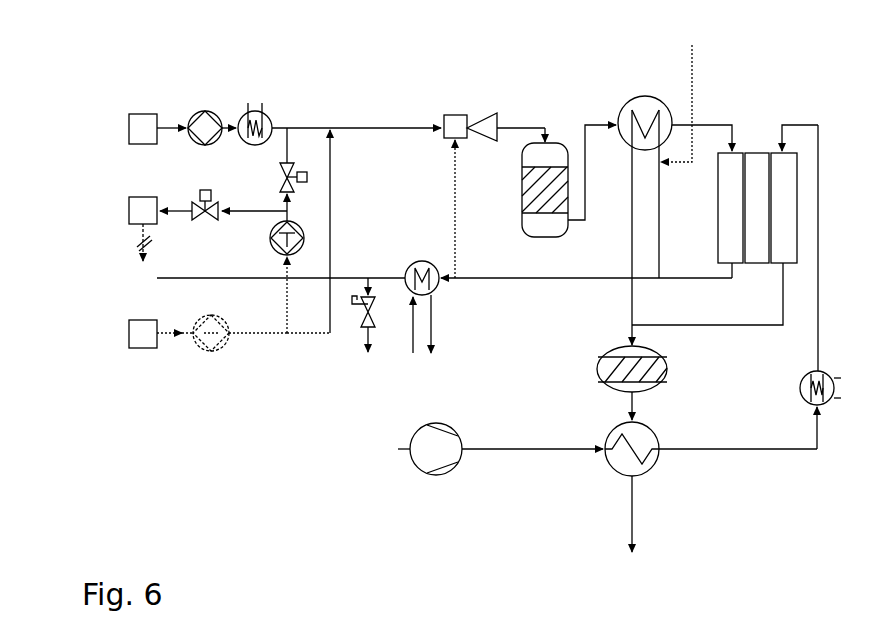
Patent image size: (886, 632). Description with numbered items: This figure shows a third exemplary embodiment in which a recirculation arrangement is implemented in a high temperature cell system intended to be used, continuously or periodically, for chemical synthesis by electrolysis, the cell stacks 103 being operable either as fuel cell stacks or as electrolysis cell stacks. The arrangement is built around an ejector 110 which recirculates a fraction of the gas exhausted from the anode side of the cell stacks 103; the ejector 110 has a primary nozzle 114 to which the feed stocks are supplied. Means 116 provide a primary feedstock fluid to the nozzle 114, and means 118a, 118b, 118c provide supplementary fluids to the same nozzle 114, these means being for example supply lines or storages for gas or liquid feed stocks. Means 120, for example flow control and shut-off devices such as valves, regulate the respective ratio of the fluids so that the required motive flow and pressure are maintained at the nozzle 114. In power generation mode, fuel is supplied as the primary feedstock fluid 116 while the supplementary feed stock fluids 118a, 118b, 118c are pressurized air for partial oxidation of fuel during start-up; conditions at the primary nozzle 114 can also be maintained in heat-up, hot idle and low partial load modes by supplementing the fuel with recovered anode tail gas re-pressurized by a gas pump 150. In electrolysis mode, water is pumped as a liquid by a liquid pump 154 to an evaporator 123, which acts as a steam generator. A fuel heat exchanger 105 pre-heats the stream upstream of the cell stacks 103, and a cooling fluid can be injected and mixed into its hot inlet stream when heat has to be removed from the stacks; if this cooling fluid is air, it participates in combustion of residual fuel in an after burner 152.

The cell stacks 103 is at (768, 104).
The fuel heat exchanger 105 is at (620, 110).
The ejector 110 is at (481, 100).
The nozzle 114 is at (442, 118).
The means for providing primary feedstock fluid 116 is at (167, 137).
The means for providing supplementary fluid 118a is at (172, 213).
The means for providing supplementary fluid 118b is at (175, 286).
The means for providing supplementary fluid 118c is at (163, 340).
The means for regulating respective ratio of the fluids 120 is at (147, 113).
The evaporator 123 is at (270, 113).
The gas pump 150 is at (305, 222).
The after burner 152 is at (657, 392).
The liquid pump 154 is at (213, 110).